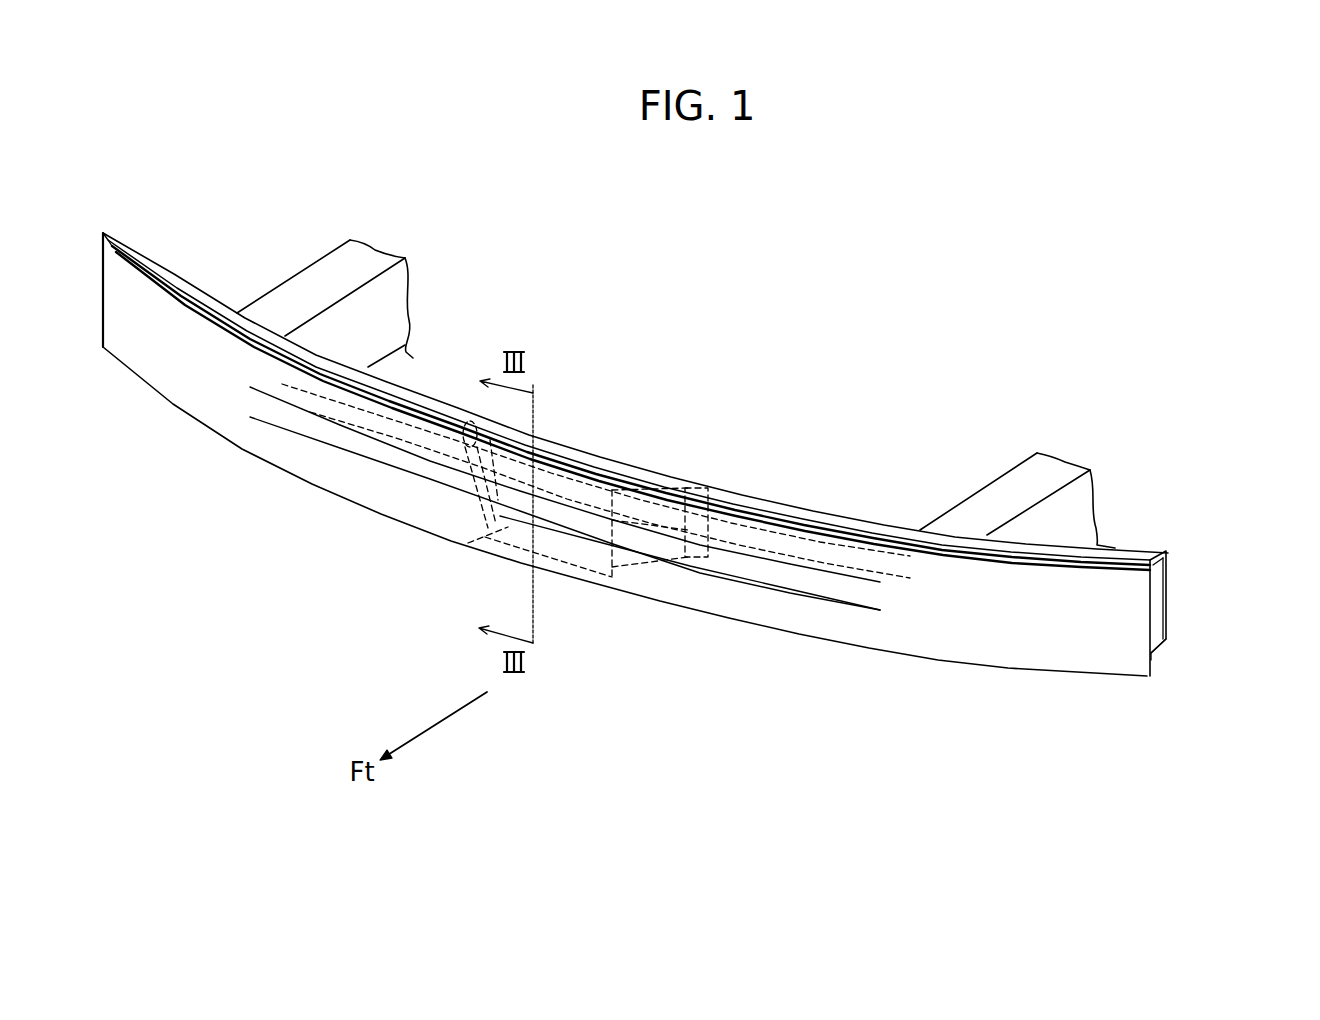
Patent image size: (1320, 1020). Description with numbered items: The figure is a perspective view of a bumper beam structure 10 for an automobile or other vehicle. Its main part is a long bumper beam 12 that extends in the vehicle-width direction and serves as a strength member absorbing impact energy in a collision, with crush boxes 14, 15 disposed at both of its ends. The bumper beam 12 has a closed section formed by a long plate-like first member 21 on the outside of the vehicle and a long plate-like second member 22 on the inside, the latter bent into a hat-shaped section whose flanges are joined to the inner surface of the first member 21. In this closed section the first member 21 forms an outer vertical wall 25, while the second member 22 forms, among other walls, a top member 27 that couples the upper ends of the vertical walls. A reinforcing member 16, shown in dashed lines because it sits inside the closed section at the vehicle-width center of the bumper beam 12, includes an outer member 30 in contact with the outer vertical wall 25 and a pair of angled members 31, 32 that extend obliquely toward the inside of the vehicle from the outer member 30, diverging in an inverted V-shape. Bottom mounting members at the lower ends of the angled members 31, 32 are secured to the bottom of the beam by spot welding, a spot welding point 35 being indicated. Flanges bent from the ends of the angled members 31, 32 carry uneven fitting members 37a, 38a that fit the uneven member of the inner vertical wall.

The bumper beam structure 10 is at (958, 333).
The bumper beam 12 is at (1248, 548).
The crush box 14 is at (313, 278).
The crush box 15 is at (1018, 460).
The reinforcing member 16 is at (577, 581).
The first member 21 is at (1128, 633).
The second member 22 is at (1157, 588).
The outer vertical wall 25 is at (800, 620).
The top member 27 is at (818, 520).
The outer member 30 is at (466, 545).
The angled member 31 is at (470, 503).
The angled member 32 is at (645, 502).
The spot welding point 35 is at (653, 565).
The uneven fitting member 37a is at (453, 472).
The uneven fitting member 38a is at (707, 485).